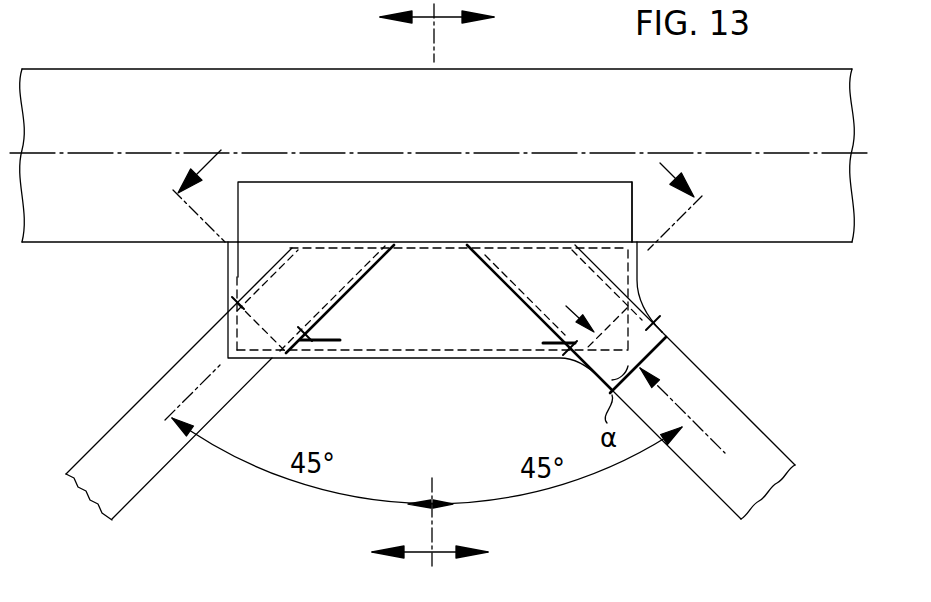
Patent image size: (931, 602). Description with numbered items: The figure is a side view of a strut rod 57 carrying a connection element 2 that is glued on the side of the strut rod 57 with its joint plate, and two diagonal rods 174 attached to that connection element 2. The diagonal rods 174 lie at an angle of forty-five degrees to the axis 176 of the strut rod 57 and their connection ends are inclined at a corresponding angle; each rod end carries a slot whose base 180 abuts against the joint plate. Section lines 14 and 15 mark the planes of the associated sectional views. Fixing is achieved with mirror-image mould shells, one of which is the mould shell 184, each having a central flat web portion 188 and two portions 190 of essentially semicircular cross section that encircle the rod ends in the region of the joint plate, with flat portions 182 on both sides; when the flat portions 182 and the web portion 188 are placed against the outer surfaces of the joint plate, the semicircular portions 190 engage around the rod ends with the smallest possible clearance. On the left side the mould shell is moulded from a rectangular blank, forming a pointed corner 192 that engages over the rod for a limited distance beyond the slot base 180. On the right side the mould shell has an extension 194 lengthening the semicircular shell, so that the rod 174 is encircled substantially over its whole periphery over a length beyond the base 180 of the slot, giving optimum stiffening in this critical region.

The connection element 2 is at (565, 172).
The section line 14- 14 is at (437, 185).
The section line 15- 15 is at (432, 285).
The strut rod 57 is at (801, 243).
The diagonal rods 174 is at (160, 392).
The axis of the strut rod 176 is at (748, 152).
The base of the slot 180 is at (233, 313).
The flat portions 182 is at (238, 274).
The mould shell 184 is at (399, 328).
The central flat web portion 188 is at (488, 346).
The semicircular portions 190 is at (512, 270).
The pointed corner 192 is at (248, 360).
The extension 194 is at (612, 380).